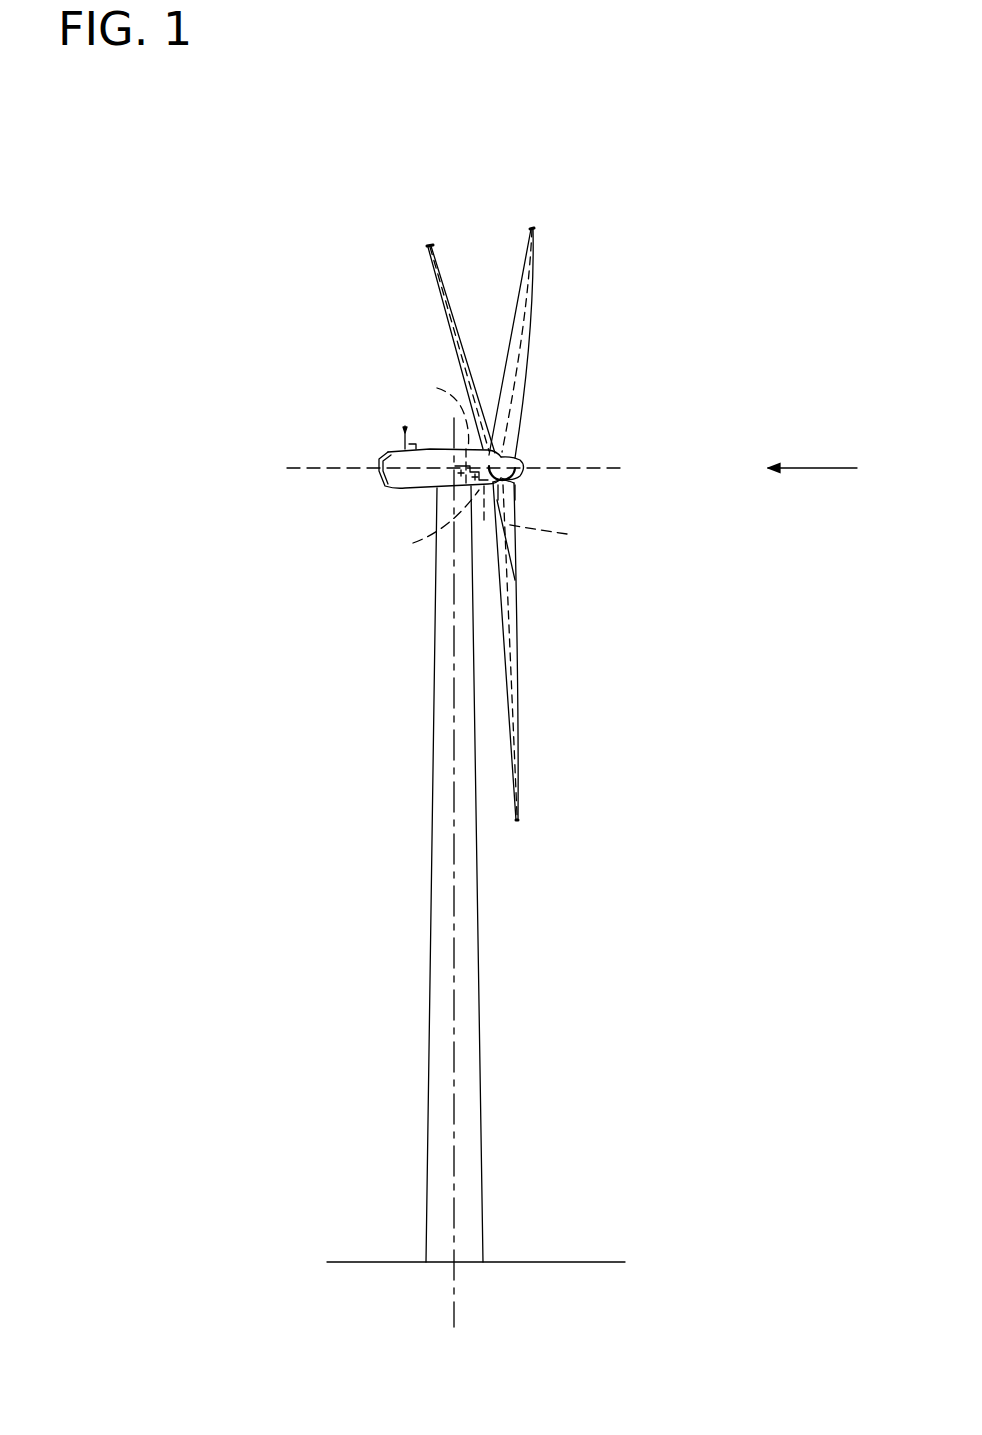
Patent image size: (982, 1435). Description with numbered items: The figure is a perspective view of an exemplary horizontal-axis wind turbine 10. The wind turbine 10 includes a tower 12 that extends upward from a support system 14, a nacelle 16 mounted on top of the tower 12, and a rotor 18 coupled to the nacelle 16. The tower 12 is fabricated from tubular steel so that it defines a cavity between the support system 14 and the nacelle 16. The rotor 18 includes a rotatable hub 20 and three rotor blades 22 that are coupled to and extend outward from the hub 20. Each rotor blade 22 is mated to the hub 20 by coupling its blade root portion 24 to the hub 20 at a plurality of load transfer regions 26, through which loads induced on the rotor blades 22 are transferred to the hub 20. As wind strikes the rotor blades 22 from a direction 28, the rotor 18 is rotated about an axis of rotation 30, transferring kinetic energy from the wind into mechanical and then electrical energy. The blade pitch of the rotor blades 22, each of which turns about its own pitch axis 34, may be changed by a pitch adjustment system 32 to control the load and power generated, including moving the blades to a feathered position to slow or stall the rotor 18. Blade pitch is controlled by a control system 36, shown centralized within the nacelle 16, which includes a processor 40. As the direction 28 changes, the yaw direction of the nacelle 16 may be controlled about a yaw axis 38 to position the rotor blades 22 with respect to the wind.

The wind turbine 10 is at (211, 254).
The tower 12 is at (431, 1033).
The support system 14 is at (383, 1262).
The nacelle 16 is at (410, 488).
The rotor 18 is at (542, 368).
The hub 20 is at (525, 462).
The rotor blade 22 is at (448, 318).
The blade root portion 24 is at (513, 577).
The load transfer region 26 is at (510, 492).
The direction 28 is at (830, 468).
The axis of rotation 30 is at (627, 468).
The pitch adjustment system 32 is at (550, 536).
The pitch axis 34 is at (426, 249).
The control system 36 is at (431, 526).
The yaw axis 38 is at (455, 916).
The processor 40 is at (443, 448).